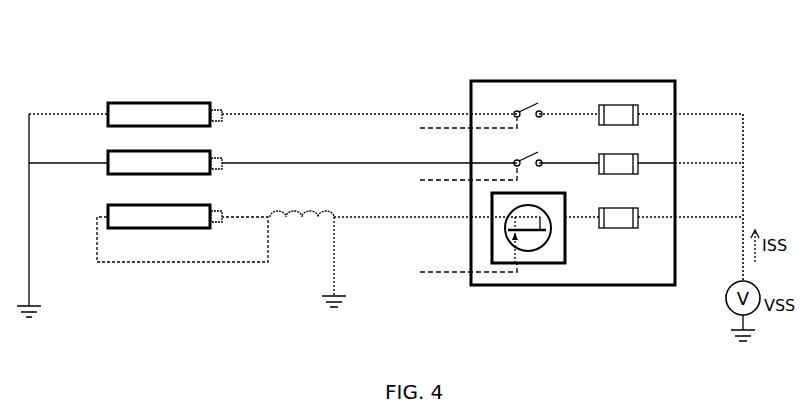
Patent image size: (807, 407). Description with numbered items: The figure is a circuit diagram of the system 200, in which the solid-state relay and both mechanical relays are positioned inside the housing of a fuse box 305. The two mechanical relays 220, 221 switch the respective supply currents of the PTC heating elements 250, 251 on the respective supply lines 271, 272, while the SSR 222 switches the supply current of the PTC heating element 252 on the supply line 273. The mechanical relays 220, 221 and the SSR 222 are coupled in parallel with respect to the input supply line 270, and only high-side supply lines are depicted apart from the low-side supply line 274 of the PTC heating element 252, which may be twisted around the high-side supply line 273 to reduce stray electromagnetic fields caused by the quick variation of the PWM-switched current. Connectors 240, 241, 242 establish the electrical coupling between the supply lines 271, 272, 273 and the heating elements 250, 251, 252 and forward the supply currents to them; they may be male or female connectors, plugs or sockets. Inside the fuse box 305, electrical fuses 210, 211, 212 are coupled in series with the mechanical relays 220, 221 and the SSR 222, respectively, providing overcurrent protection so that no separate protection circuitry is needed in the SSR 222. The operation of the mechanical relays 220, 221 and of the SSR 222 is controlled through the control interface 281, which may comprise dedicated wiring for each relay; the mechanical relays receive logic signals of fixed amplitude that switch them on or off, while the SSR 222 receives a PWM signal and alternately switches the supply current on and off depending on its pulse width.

The system 200 is at (735, 22).
The fuse box 305 is at (495, 80).
The PTC heating element 250 is at (107, 106).
The PTC heating element 251 is at (107, 155).
The PTC heating element 252 is at (107, 208).
The connector 240 is at (221, 110).
The connector 241 is at (221, 158).
The connector 242 is at (221, 211).
The supply line 271 is at (313, 113).
The supply line 272 is at (312, 156).
The supply line 273 is at (380, 211).
The low-side supply line 274 is at (31, 113).
The control interface 281 is at (452, 198).
The mechanical relay 220 is at (528, 106).
The mechanical relay 221 is at (528, 155).
The SSR 222 is at (566, 250).
The electrical fuse 210 is at (599, 107).
The electrical fuse 211 is at (599, 156).
The electrical fuse 212 is at (599, 211).
The input supply line 270 is at (727, 113).